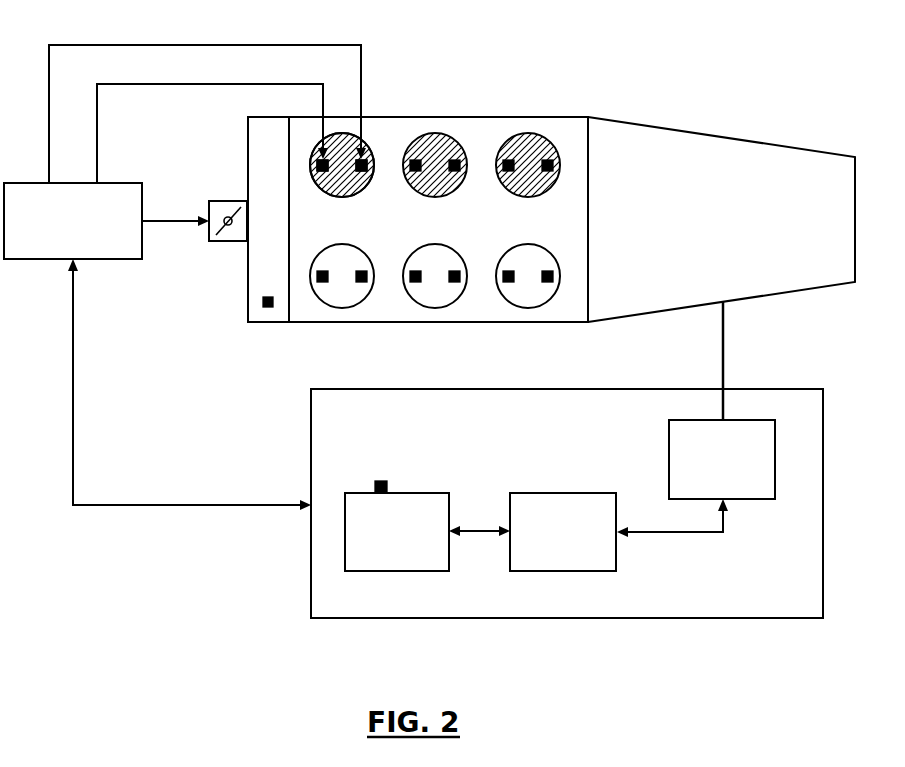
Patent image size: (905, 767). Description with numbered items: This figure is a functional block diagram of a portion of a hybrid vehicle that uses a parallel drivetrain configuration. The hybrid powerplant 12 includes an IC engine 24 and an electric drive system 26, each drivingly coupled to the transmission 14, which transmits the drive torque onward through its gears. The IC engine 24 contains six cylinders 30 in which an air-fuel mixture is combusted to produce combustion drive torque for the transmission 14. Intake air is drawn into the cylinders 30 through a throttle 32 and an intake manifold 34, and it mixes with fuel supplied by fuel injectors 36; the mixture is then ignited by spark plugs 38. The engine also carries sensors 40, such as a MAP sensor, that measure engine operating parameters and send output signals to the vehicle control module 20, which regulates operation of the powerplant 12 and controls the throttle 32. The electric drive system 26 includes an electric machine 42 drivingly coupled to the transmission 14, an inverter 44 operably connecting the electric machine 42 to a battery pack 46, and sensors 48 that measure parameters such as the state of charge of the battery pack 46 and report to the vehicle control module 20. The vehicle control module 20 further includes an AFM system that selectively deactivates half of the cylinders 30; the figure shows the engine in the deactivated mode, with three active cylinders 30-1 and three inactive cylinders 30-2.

The hybrid powerplant 12 is at (137, 564).
The transmission 14 is at (730, 138).
The vehicle control module 20 is at (115, 183).
The IC engine 24 is at (490, 117).
The electric drive system 26 is at (548, 389).
The cylinder 30 is at (343, 197).
The active cylinders 30-1 is at (365, 142).
The inactive cylinders 30-2 is at (366, 299).
The throttle 32 is at (230, 201).
The intake manifold 34 is at (270, 322).
The fuel injector 36 is at (365, 193).
The spark plug 38 is at (320, 193).
The sensor 40 is at (268, 297).
The electric machine 42 is at (757, 499).
The inverter 44 is at (562, 493).
The battery pack 46 is at (422, 493).
The sensor 48 is at (381, 481).